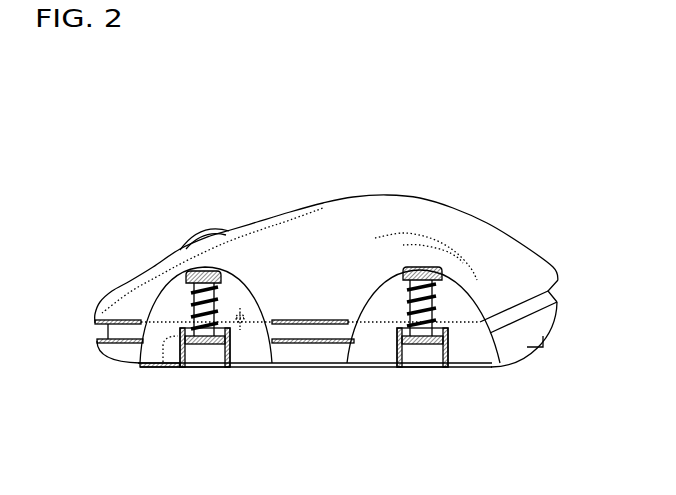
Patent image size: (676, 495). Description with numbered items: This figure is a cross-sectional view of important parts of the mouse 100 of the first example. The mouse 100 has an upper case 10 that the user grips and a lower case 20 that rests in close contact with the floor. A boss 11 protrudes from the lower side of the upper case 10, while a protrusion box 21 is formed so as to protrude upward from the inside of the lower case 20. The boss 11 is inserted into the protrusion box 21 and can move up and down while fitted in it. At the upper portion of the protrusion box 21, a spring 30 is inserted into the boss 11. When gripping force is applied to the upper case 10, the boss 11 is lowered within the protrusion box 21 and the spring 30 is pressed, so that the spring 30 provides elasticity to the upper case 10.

The mouse 100 is at (369, 183).
The upper case 10 is at (466, 218).
The lower case 20 is at (257, 368).
The protrusion box 21 is at (163, 368).
The boss 11 is at (213, 368).
The spring 30 is at (185, 298).